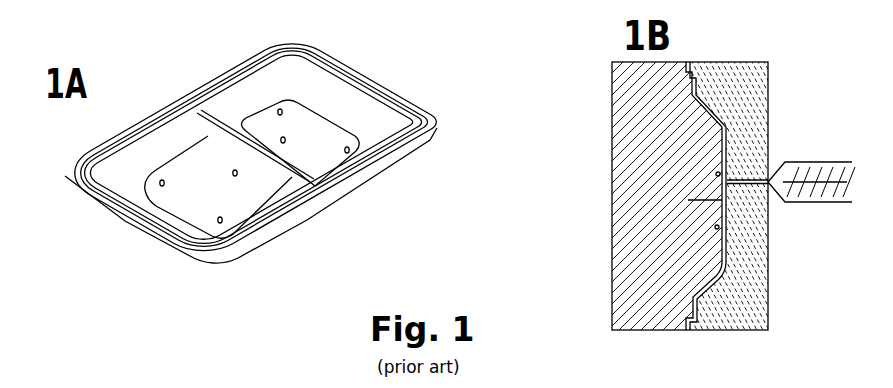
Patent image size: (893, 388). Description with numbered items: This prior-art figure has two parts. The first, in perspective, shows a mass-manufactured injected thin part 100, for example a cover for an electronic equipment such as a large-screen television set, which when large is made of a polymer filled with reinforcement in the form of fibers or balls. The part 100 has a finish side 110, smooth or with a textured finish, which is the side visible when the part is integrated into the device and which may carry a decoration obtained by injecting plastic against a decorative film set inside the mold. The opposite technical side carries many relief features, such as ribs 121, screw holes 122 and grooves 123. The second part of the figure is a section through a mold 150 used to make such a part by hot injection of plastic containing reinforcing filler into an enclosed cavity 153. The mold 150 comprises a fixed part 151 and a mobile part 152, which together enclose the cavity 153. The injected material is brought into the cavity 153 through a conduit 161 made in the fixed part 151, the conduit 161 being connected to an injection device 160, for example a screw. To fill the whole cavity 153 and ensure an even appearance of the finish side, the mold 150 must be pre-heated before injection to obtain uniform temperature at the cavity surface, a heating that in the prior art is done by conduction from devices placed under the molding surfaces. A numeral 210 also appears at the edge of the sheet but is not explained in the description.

The injected thin part 100 is at (172, 46).
The finish side 110 is at (370, 187).
The ribs 121 is at (296, 172).
The screw holes 122 is at (148, 187).
The grooves 123 is at (127, 137).
The mold 150 is at (748, 38).
The fixed part 151 is at (768, 302).
The mobile part 152 is at (612, 117).
The enclosed cavity 153 is at (712, 108).
The injection device 160 is at (810, 203).
The conduit 161 is at (748, 178).
The tray (FIG. 2) 210 is at (324, 383).